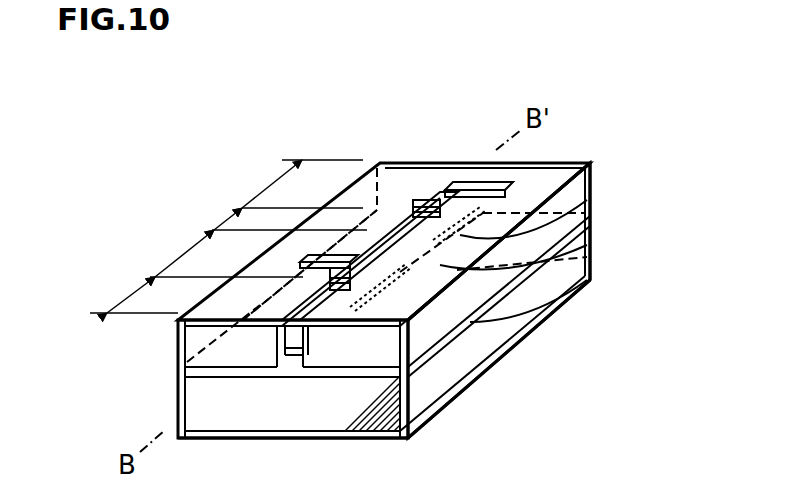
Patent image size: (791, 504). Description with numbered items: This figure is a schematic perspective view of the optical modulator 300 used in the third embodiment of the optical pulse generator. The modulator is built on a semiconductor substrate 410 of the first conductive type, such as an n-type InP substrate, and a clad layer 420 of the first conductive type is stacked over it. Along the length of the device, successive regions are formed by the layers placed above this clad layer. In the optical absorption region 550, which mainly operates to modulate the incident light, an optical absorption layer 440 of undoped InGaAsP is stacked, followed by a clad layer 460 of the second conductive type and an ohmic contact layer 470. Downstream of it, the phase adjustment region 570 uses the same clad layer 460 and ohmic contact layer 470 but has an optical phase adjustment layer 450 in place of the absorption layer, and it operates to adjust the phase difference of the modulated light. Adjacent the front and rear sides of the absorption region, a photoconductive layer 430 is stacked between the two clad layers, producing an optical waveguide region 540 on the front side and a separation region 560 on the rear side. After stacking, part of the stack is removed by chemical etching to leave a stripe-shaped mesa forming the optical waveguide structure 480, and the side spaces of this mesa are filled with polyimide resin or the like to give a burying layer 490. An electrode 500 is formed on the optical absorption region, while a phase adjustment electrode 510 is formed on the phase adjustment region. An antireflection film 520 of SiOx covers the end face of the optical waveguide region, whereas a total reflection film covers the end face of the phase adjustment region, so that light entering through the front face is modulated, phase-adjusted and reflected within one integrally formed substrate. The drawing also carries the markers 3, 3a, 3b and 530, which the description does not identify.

The piezoelectric device package 3 is at (414, 86).
The front side face 3a is at (403, 397).
The right side face 3b is at (596, 178).
The optical modulator 300 is at (176, 184).
The semiconductor substrate 410 is at (438, 388).
The clad layer of the first conductive type 420 is at (443, 352).
The photoconductive layer 430 is at (590, 249).
The optical absorption layer 440 is at (590, 280).
The optical phase adjustment layer 450 is at (560, 233).
The clad layer of the second conductive type 460 is at (303, 337).
The ohmic contact layer 470 is at (430, 197).
The optical waveguide structure 480 is at (277, 348).
The burying layer 490 is at (283, 258).
The electrode 500 is at (318, 253).
The phase adjustment electrode 510 is at (566, 165).
The antireflection film 520 is at (408, 432).
The right vertical edge 530 is at (597, 203).
The optical waveguide region 540 is at (108, 294).
The optical absorption region 550 is at (166, 253).
The separation region 560 is at (201, 214).
The phase adjustment region 570 is at (259, 183).